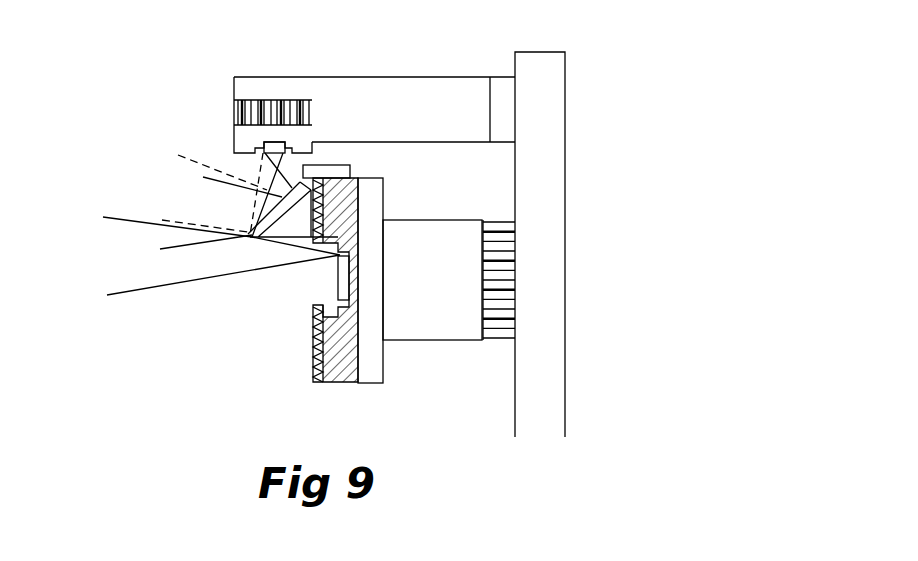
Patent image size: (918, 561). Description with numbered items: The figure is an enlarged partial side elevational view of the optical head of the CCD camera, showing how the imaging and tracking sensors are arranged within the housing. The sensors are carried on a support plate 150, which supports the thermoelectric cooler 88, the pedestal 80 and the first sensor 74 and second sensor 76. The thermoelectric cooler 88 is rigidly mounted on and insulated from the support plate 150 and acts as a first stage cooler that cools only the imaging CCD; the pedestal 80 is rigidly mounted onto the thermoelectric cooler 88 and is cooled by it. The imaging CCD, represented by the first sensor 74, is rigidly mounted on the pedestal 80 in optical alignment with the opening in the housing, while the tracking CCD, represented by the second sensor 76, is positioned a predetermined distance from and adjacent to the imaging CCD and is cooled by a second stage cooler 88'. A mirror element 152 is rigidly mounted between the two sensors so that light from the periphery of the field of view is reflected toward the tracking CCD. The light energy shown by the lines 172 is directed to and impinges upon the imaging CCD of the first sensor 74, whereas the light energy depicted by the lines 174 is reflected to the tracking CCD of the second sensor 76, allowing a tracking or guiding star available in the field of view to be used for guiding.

The support plate 150 is at (550, 95).
The second stage cooler 88' is at (374, 86).
The second sensor 76 is at (278, 147).
The prism 152 is at (252, 237).
The lines 174 is at (218, 175).
The lines 172 is at (147, 289).
The first sensor 74 is at (342, 272).
The pedestal 80 is at (423, 237).
The thermoelectric cooler 88 is at (554, 244).